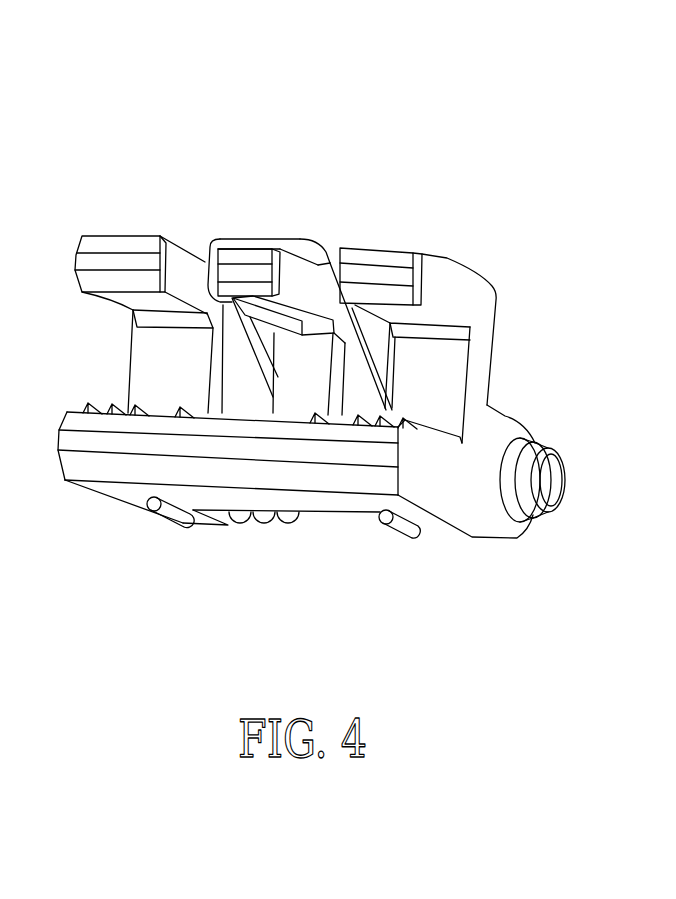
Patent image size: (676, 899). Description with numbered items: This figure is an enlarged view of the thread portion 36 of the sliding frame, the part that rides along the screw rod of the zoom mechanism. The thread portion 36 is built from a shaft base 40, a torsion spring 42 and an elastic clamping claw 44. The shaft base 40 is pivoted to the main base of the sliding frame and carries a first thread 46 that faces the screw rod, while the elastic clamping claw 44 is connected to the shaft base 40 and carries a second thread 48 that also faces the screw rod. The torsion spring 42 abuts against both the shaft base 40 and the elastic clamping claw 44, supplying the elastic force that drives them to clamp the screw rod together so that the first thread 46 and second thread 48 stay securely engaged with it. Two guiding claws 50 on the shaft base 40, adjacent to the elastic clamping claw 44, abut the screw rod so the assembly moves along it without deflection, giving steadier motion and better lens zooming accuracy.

The thread portion 36 is at (501, 64).
The shaft base 40 is at (505, 418).
The torsion spring 42 is at (325, 250).
The elastic clamping claw 44 is at (243, 277).
The first thread 46 is at (84, 412).
The second thread 48 is at (205, 280).
The guiding claw 50 is at (115, 255).